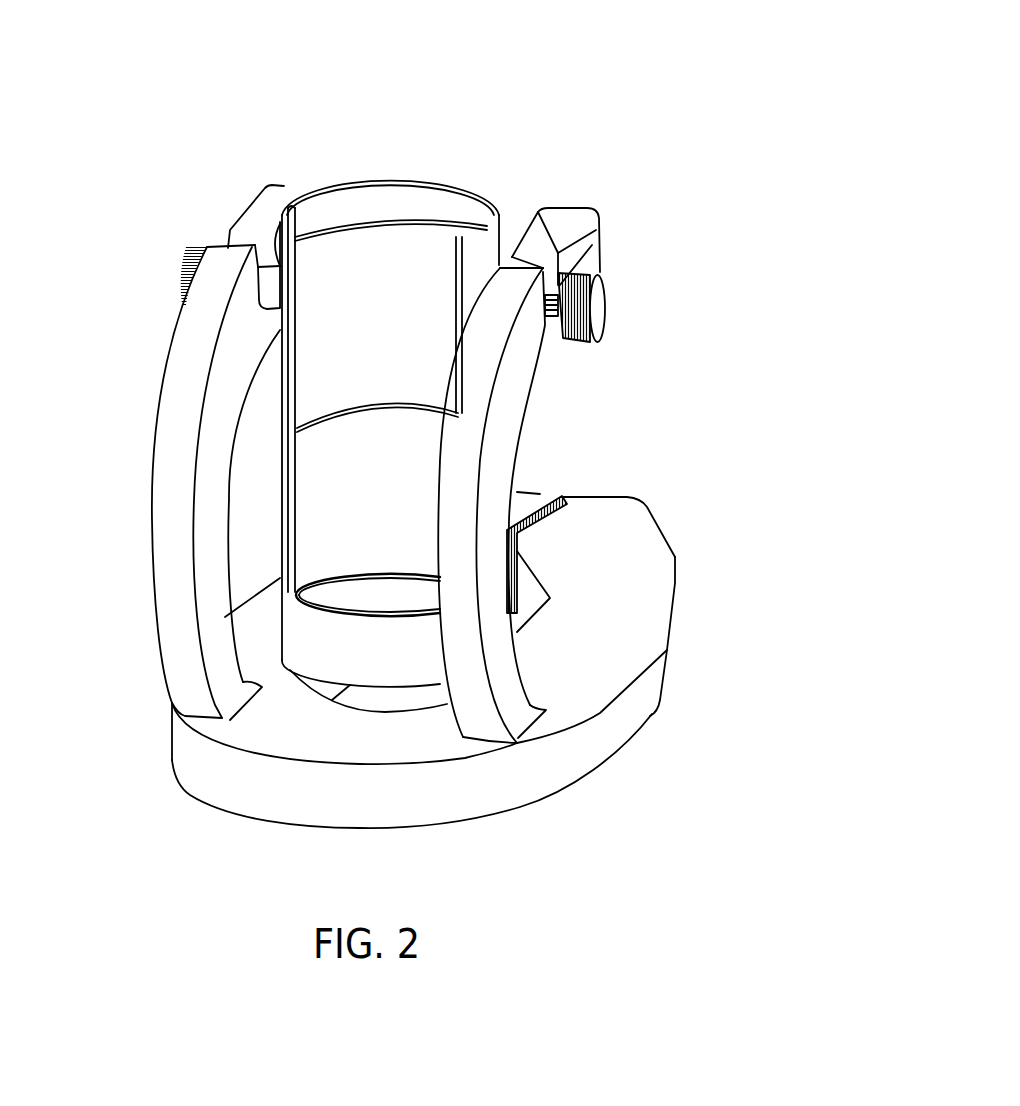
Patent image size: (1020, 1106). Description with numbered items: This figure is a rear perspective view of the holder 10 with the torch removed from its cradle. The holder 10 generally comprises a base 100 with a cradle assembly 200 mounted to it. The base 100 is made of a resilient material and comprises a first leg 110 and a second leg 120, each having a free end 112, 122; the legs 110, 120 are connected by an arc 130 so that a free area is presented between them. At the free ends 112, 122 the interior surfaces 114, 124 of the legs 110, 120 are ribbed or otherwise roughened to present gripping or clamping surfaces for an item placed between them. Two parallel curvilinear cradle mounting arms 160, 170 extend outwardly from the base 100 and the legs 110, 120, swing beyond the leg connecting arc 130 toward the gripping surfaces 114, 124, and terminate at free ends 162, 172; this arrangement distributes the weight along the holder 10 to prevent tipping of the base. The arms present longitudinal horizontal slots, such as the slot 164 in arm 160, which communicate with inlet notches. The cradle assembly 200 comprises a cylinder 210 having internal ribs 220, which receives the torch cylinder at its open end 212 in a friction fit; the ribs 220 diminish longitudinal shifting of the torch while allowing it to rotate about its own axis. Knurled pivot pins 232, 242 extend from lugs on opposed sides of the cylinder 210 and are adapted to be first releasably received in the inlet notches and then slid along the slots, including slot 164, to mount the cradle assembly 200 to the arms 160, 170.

The holder 10 is at (683, 330).
The base 100 is at (773, 552).
The first leg 110 is at (675, 645).
The free end of first leg 112 is at (630, 495).
The interior gripping surface 114 is at (560, 498).
The second leg 120 is at (250, 604).
The free end of second leg 122 is at (517, 492).
The interior gripping surface 124 is at (550, 493).
The arc 130 is at (337, 805).
The cradle mounting arm 160 is at (518, 687).
The free end of cradle mounting arm 162 is at (600, 235).
The longitudinal horizontal slot 164 is at (563, 340).
The cradle mounting arm 170 is at (160, 663).
The free end of cradle mounting arm 172 is at (280, 183).
The cradle assembly 200 is at (473, 113).
The cylinder 210 is at (460, 358).
The open end 212 is at (385, 183).
The internal ribs 220 is at (300, 243).
The knurled pivot pin 232 is at (613, 303).
The knurled pivot pin 242 is at (176, 258).